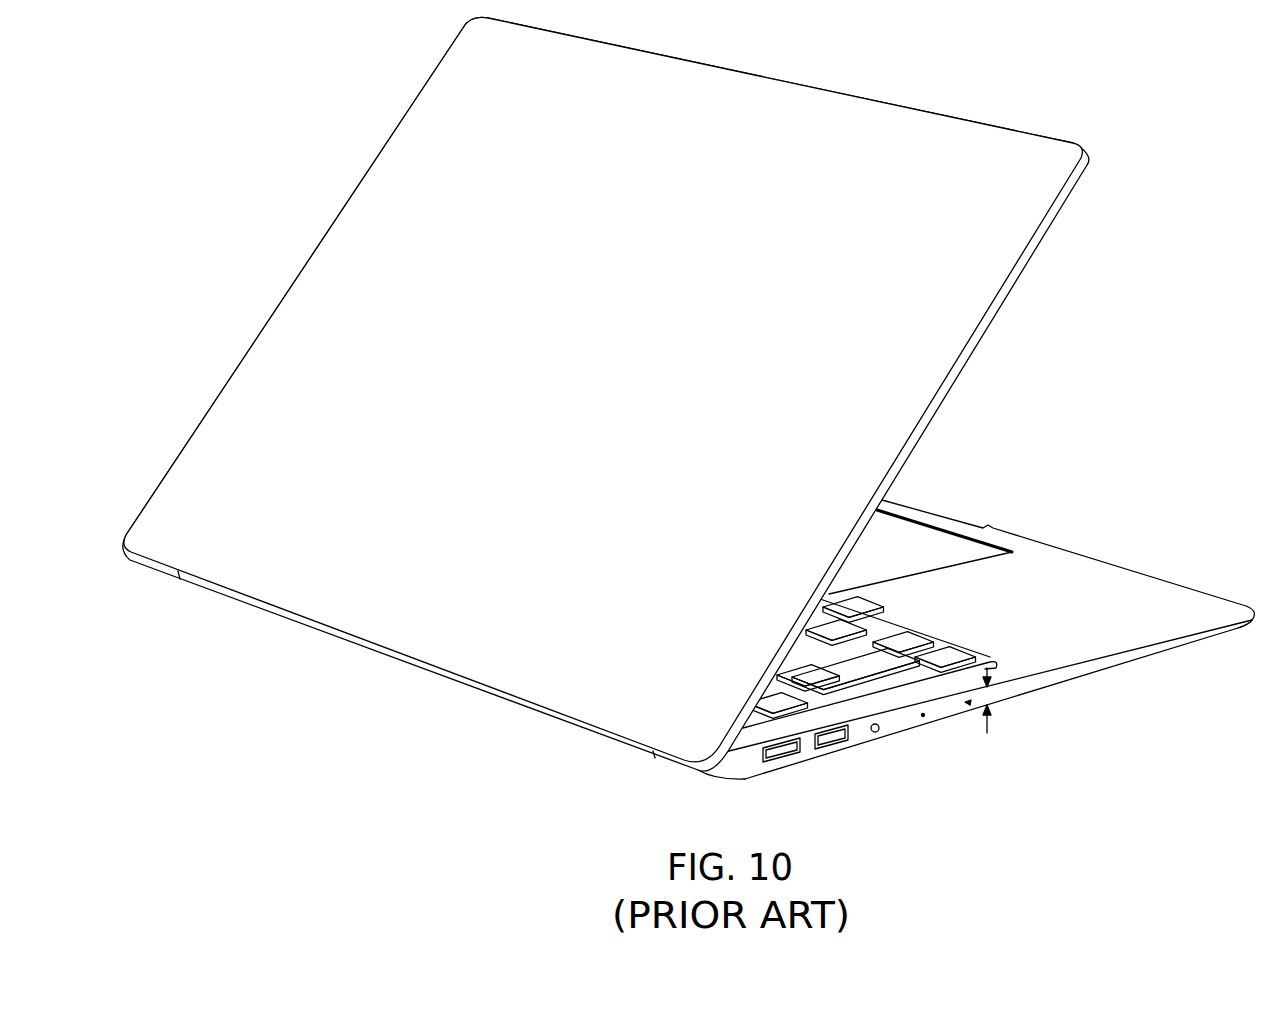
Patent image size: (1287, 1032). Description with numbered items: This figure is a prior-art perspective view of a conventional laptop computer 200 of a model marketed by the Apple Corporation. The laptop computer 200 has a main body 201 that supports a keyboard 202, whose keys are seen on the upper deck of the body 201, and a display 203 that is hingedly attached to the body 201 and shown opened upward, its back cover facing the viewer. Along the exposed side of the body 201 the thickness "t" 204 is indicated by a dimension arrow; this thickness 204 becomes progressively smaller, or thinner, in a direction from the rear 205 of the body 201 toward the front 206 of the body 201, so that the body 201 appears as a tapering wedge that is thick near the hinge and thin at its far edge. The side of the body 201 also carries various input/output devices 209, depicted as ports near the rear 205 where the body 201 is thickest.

The laptop computer 200 is at (185, 105).
The main body 201 is at (1137, 593).
The keyboard 202 is at (903, 640).
The display 203 is at (1032, 256).
The thickness "t" 204 is at (997, 694).
The rear 205 is at (742, 766).
The front 206 is at (1218, 634).
The input/output devices 209 is at (800, 762).